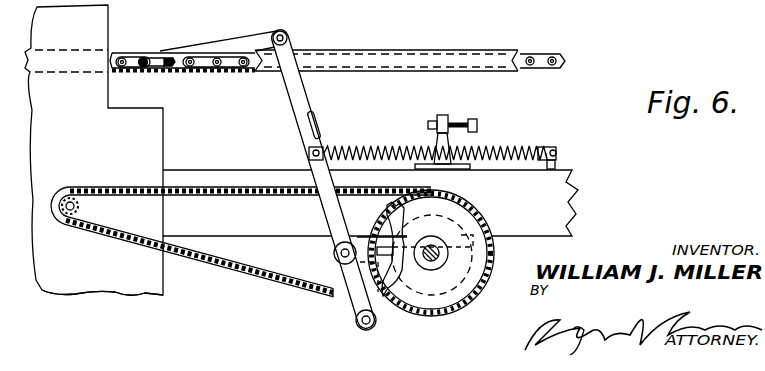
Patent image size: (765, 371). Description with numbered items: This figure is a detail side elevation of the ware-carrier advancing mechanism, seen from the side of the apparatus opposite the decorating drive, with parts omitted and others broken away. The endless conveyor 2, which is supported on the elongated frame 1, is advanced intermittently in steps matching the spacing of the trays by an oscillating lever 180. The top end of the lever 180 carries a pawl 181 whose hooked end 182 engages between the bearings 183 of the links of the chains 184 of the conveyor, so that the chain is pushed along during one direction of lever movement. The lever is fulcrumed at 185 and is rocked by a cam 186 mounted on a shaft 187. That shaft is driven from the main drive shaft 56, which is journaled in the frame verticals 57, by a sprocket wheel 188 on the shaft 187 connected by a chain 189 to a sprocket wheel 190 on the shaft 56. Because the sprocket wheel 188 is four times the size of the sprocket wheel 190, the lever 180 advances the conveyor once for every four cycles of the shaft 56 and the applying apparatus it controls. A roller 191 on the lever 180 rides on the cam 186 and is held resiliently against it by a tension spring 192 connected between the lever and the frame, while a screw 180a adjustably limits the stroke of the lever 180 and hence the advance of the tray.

The frame 1 is at (572, 193).
The conveyor 2 is at (574, 63).
The shaft 56 is at (72, 220).
The frame verticals 57 is at (103, 288).
The oscillating lever 180 is at (303, 102).
The screw 180a is at (437, 119).
The pawl 181 is at (263, 33).
The hooked end 182 is at (165, 53).
The bearings 183 is at (143, 57).
The chains 184 is at (552, 38).
The fulcrum 185 is at (357, 325).
The cam 186 is at (372, 272).
The shaft 187 is at (433, 262).
The sprocket wheel 188 is at (484, 254).
The chain 189 is at (241, 251).
The sprocket wheel 190 is at (86, 208).
The roller 191 is at (335, 257).
The tension spring 192 is at (398, 147).